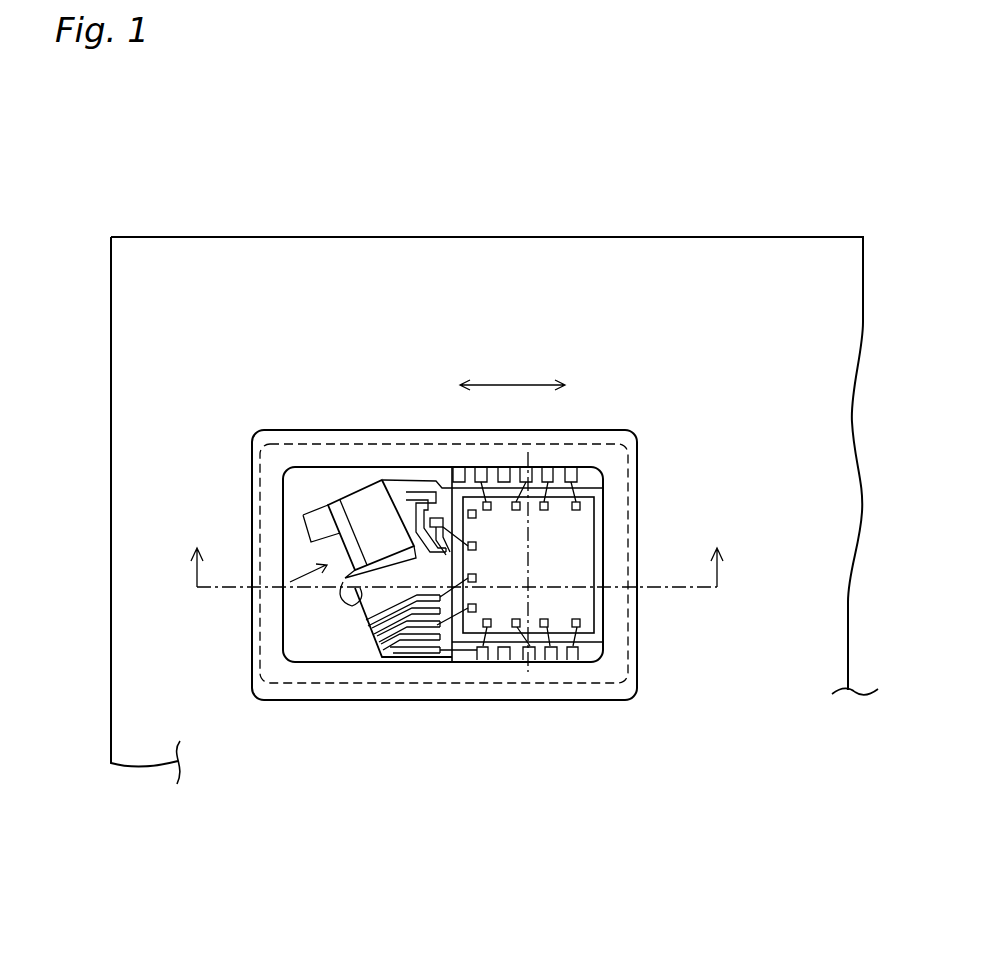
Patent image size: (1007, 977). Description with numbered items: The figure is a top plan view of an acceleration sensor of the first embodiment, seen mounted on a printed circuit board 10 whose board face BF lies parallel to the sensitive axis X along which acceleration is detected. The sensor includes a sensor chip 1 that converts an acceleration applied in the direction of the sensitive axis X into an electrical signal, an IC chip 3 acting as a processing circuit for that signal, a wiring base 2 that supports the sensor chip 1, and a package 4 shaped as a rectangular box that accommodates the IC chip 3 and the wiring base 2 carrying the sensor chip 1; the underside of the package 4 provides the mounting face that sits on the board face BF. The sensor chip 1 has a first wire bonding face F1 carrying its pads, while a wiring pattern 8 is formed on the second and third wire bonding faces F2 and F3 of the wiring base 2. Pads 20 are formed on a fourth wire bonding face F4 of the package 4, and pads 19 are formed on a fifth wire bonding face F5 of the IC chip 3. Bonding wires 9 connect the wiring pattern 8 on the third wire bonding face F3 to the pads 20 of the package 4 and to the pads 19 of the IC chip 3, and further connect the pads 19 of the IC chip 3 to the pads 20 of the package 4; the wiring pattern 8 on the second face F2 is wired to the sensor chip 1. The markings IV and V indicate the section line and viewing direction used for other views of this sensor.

The sensor chip 1 is at (355, 490).
The wiring base 2 is at (420, 477).
The IC chip 3 is at (596, 537).
The package 4 is at (285, 700).
The wiring pattern 8 is at (420, 652).
The bonding wires 9 is at (585, 632).
The printed circuit board 10 is at (632, 237).
The pads 19 is at (587, 509).
The pads 20 is at (548, 468).
The board face BF is at (130, 309).
The first wire bonding face F1 is at (340, 570).
The second wire bonding face F2 is at (368, 650).
The third wire bonding face F3 is at (397, 488).
The fourth wire bonding face F4 is at (598, 471).
The fifth wire bonding face F5 is at (560, 553).
The sensitive axis X is at (512, 369).
The section line IV- IV is at (459, 562).
The view direction V is at (308, 568).